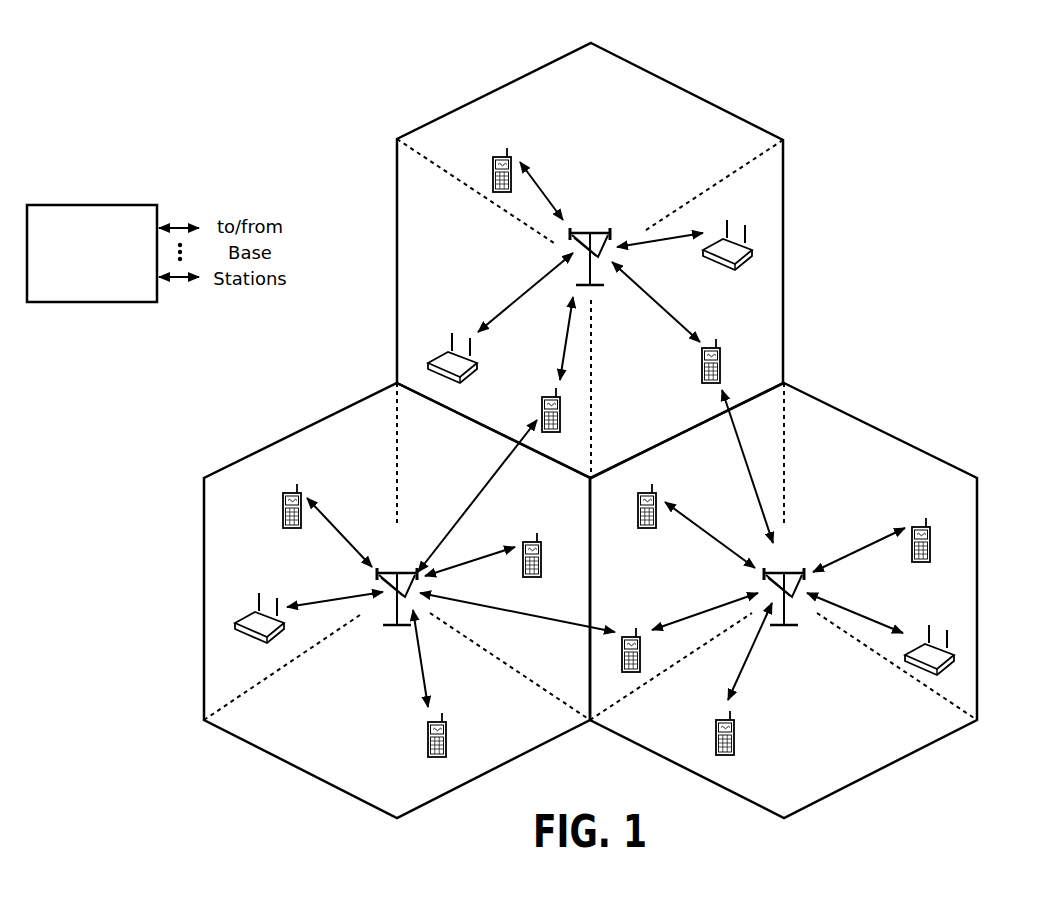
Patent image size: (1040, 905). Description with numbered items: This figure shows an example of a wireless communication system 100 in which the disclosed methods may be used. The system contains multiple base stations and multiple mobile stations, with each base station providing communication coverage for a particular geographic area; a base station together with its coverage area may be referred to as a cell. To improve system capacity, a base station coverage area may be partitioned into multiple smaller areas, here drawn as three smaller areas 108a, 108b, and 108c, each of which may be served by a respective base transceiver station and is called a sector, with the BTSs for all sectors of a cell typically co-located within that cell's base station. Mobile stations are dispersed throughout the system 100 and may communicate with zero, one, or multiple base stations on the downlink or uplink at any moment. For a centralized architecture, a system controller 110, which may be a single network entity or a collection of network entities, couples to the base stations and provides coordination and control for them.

The wireless communication system 100 is at (971, 80).
The smaller area 108a is at (590, 162).
The smaller area 108b is at (499, 346).
The smaller area 108c is at (654, 409).
The system controller 110 is at (86, 205).